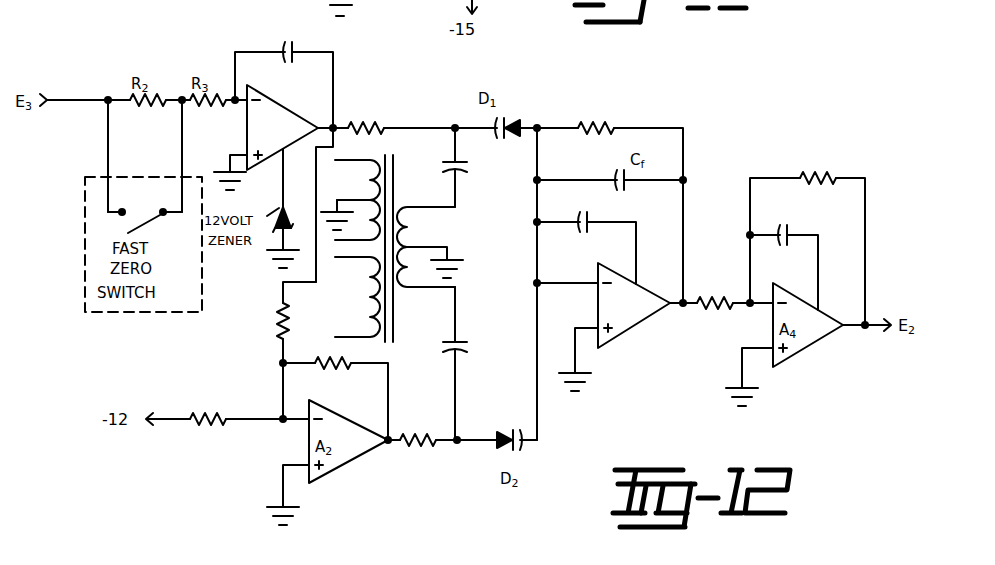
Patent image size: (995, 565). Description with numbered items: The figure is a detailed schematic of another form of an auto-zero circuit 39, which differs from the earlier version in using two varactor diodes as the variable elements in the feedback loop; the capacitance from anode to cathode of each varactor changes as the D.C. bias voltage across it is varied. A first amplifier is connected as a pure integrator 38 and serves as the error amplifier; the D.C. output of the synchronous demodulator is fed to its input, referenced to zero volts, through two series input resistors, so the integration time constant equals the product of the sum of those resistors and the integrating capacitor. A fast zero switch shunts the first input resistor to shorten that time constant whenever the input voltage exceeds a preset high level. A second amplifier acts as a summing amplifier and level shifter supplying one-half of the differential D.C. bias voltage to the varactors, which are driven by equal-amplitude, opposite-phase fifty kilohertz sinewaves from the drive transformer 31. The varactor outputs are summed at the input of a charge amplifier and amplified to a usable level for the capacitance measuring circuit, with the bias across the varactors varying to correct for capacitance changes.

The integrator 38 is at (213, 49).
The drive transformer 31 is at (388, 161).
The auto-zero circuit 39 is at (628, 362).